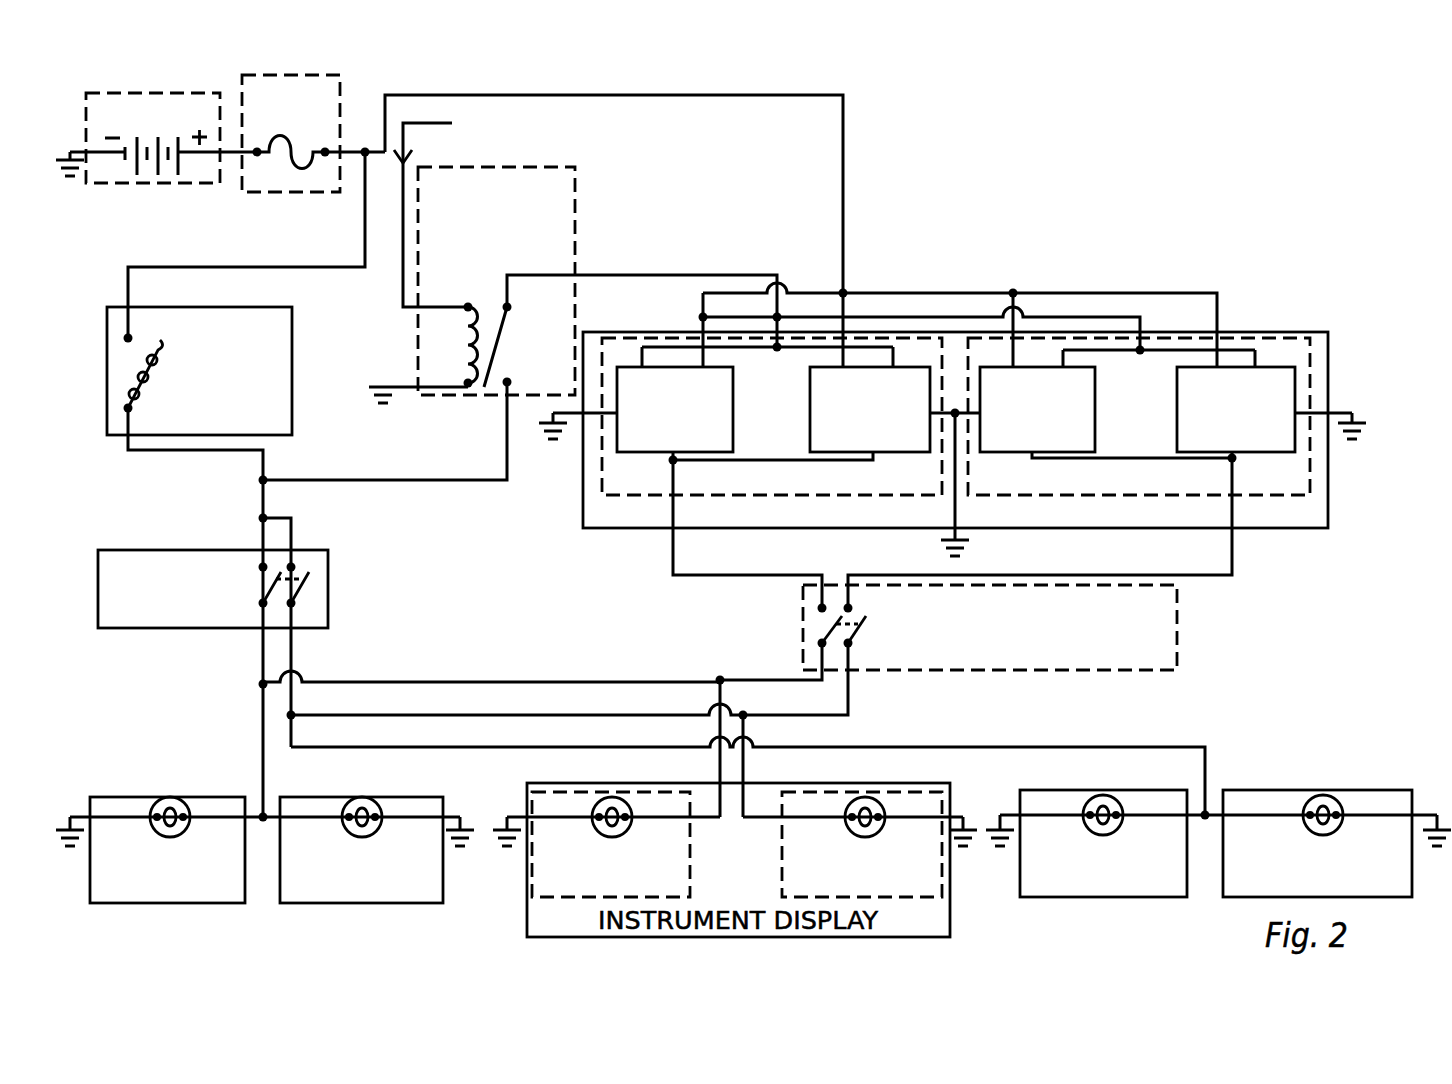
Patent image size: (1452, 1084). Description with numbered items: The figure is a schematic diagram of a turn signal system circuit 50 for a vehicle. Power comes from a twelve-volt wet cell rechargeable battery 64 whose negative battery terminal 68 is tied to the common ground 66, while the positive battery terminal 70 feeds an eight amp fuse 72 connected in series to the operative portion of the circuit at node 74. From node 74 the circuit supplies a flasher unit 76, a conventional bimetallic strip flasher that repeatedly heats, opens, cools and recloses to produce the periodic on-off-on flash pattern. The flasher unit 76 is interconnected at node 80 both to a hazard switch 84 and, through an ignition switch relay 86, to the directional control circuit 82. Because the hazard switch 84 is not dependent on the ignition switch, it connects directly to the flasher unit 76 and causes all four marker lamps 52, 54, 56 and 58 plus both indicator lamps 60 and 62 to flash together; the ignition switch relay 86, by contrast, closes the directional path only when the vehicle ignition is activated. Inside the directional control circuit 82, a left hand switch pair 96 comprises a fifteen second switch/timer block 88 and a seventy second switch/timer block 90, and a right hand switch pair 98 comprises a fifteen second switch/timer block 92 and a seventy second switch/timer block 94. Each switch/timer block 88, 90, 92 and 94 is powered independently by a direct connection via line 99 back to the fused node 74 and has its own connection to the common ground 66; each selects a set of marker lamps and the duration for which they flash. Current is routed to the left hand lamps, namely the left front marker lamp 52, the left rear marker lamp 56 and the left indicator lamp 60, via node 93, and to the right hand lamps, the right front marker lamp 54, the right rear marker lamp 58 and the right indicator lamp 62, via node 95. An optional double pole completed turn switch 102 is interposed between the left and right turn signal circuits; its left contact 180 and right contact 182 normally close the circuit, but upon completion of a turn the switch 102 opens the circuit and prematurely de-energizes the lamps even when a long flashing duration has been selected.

The turn signal system circuit 50 is at (1020, 237).
The left front marker lamp 52 is at (365, 797).
The right front marker lamp 54 is at (1105, 795).
The left rear marker lamp 56 is at (173, 797).
The right rear marker lamp 58 is at (1323, 795).
The left indicator lamp 60 is at (866, 797).
The right indicator lamp 62 is at (612, 797).
The battery 64 is at (152, 178).
The common ground 66 is at (62, 180).
The negative battery terminal 68 is at (116, 165).
The positive battery terminal 70 is at (205, 164).
The fuse 72 is at (282, 176).
The node 74 is at (360, 160).
The flasher unit 76 is at (112, 398).
The node 80 is at (250, 484).
The directional control circuit 82 is at (1236, 320).
The hazard switch 84 is at (180, 640).
The ignition switch relay 86 is at (410, 345).
The left 15 second switch/timer block 88 is at (733, 390).
The left 70 second switch/timer block 90 is at (810, 407).
The right 15 second switch/timer block 92 is at (1177, 385).
The node 93 is at (718, 678).
The right 70 second switch/timer block 94 is at (1095, 440).
The node 95 is at (743, 712).
The left hand switch pair 96 is at (613, 512).
The right hand switch pair 98 is at (1330, 340).
The line 99 is at (843, 178).
The completed turn switch 102 is at (1195, 634).
The left contact 180 is at (805, 635).
The right contact 182 is at (866, 665).